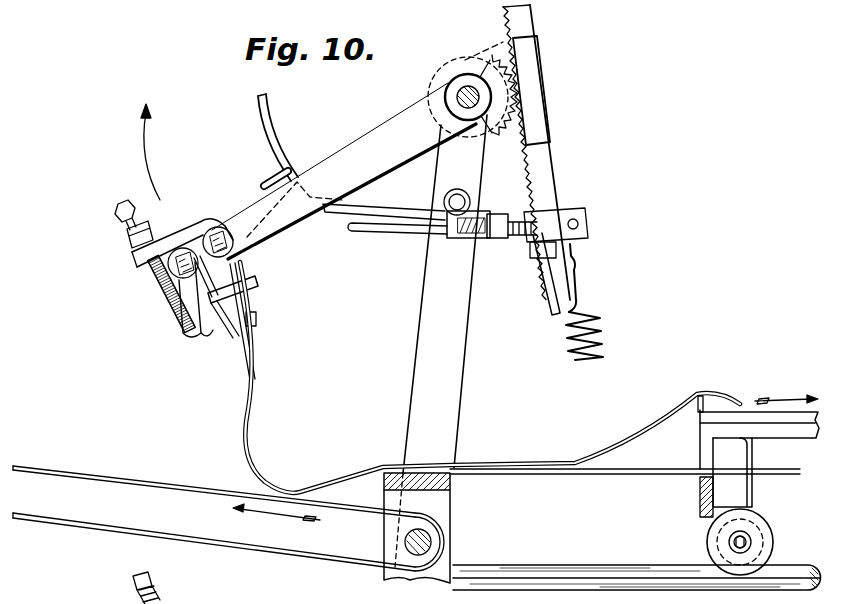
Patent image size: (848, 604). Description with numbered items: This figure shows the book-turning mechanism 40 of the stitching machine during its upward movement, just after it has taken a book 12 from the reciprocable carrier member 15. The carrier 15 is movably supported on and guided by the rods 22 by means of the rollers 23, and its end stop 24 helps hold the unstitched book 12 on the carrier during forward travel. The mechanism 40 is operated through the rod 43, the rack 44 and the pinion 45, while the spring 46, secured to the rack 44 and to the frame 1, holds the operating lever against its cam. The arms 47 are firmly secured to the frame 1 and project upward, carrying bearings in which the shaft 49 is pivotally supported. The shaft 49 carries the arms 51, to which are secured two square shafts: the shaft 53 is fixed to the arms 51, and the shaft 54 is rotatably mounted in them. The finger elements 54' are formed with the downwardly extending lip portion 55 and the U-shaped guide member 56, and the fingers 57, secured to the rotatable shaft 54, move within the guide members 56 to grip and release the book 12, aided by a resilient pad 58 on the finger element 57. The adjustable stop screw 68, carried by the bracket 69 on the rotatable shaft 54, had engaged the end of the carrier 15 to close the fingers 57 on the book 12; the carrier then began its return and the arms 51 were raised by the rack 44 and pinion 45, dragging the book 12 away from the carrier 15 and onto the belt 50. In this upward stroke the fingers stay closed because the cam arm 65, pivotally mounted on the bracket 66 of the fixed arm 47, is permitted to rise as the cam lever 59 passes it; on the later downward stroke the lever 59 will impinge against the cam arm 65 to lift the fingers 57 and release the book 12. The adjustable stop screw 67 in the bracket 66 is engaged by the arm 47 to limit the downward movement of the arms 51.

The frame 1 is at (444, 501).
The book 12 is at (250, 440).
The reciprocable carrier member 15 is at (794, 430).
The rods 22 is at (690, 594).
The rollers 23 is at (766, 535).
The end stop 24 is at (693, 408).
The book-turning mechanism 40 is at (197, 92).
The rod 43 is at (548, 290).
The rack 44 is at (542, 172).
The pinion 45 is at (468, 54).
The spring 46 is at (600, 323).
The arms 47 is at (452, 385).
The shaft 49 is at (456, 94).
The belt 50 is at (158, 478).
The arms 51 is at (376, 134).
The square shaft 53 is at (184, 333).
The square shaft 54 is at (221, 253).
The finger element 54' is at (192, 347).
The lip portion 55 is at (246, 372).
The U-shaped guide member 56 is at (250, 283).
The finger elements 57 is at (236, 246).
The resilient pad 58 is at (258, 316).
The cam lever 59 is at (272, 186).
The cam arm 65 is at (270, 112).
The bracket 66 is at (440, 228).
The adjustable stop screw 67 is at (472, 200).
The adjustable stop screw 68 is at (160, 282).
The bracket 69 is at (190, 227).